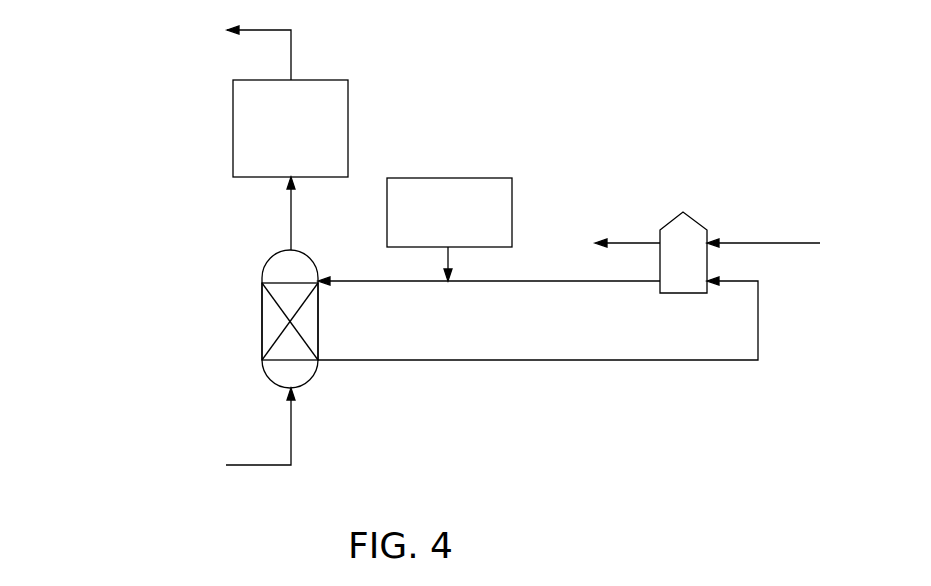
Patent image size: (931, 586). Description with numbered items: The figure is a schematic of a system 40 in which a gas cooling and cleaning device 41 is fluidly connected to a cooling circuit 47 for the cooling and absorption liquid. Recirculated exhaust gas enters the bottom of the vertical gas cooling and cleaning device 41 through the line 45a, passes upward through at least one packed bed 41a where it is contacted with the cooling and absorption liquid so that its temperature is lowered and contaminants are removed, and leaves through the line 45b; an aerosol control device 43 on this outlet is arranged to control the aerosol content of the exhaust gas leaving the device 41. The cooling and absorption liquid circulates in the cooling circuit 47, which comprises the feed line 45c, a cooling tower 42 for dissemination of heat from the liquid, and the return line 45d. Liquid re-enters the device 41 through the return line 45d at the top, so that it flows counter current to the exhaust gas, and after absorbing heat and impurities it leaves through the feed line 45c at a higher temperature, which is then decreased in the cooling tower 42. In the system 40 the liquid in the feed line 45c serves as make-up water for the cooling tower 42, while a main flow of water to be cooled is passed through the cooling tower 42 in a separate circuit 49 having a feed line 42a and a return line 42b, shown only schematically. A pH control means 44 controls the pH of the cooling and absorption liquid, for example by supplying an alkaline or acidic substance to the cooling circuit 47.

The system 40 is at (118, 136).
The gas cooling and cleaning device 41 is at (262, 270).
The packed bed 41a is at (270, 322).
The cooling tower 42 is at (679, 233).
The feed line 42a is at (736, 243).
The return line 42b is at (626, 243).
The aerosol control device 43 is at (233, 140).
The pH control means 44 is at (447, 178).
The line 45a is at (291, 430).
The line 45b is at (291, 212).
The feed line 45c is at (395, 360).
The return line 45d is at (348, 281).
The cooling circuit 47 is at (680, 360).
The circuit 49 is at (808, 243).